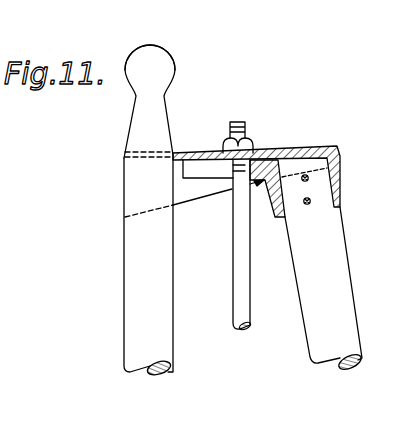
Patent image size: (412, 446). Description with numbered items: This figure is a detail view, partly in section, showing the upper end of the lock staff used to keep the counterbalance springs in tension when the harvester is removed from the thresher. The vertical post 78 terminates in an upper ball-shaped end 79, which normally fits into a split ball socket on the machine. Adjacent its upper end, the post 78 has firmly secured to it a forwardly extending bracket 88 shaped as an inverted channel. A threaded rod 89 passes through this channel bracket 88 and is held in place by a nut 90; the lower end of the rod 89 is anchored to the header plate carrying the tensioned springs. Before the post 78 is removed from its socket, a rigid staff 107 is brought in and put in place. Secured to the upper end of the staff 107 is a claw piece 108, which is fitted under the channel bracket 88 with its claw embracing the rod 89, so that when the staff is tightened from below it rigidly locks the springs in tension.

The vertical post 78 is at (162, 298).
The upper ball-shaped end 79 is at (167, 60).
The bracket 88 is at (187, 155).
The threaded rod 89 is at (242, 253).
The nut 90 is at (253, 133).
The staff 107 is at (330, 242).
The claw piece 108 is at (264, 183).